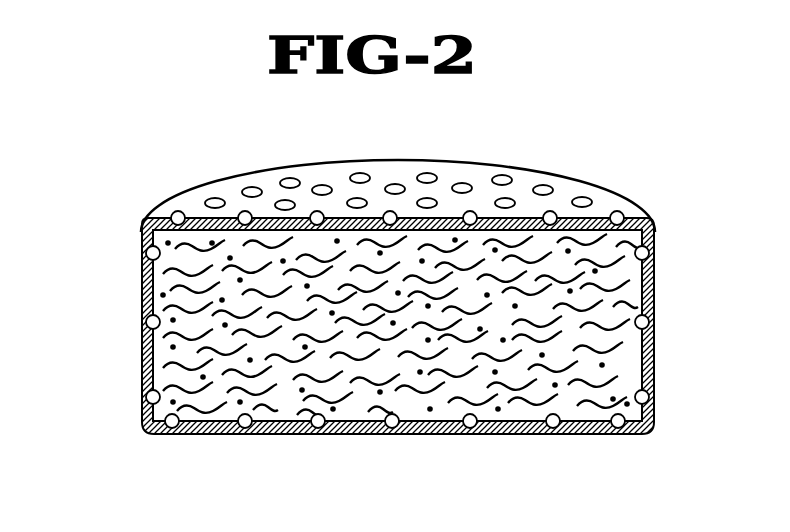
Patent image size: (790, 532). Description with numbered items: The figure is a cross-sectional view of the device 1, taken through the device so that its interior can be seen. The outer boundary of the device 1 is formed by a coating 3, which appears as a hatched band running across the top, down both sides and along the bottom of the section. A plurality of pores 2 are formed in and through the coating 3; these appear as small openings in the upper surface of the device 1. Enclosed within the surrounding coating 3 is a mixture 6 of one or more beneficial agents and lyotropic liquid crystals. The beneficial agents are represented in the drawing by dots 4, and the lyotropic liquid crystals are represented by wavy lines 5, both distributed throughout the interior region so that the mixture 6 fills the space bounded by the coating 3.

The device 1 is at (553, 171).
The pores 2 is at (240, 212).
The coating 3 is at (581, 432).
The beneficial agents 4 is at (618, 308).
The lyotropic liquid crystals 5 is at (350, 397).
The mixture 6 is at (162, 375).